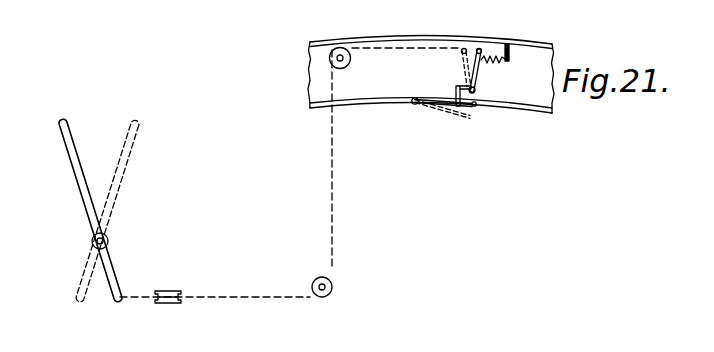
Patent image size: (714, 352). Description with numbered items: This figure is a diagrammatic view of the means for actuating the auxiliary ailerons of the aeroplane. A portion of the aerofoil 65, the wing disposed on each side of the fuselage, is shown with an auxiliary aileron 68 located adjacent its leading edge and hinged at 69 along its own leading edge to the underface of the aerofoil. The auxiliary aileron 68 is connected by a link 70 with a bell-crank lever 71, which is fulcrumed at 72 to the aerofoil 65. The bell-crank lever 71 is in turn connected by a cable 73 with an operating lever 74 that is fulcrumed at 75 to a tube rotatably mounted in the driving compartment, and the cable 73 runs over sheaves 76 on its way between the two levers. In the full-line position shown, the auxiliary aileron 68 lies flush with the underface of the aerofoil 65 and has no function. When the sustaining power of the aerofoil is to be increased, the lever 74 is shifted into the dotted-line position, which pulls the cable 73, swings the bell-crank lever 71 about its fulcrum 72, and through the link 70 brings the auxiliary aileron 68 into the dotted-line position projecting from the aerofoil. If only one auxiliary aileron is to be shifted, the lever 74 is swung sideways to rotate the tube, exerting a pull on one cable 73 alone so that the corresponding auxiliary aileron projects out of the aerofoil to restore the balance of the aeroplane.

The aerofoil 65 is at (380, 37).
The auxiliary aileron 68 is at (448, 100).
The hinge 69 is at (414, 104).
The link 70 is at (480, 94).
The bell-crank lever 71 is at (481, 67).
The fulcrum 72 is at (476, 90).
The cable 73 is at (335, 181).
The lever 74 is at (78, 185).
The fulcrum 75 is at (106, 237).
The sheaves 76 is at (170, 291).